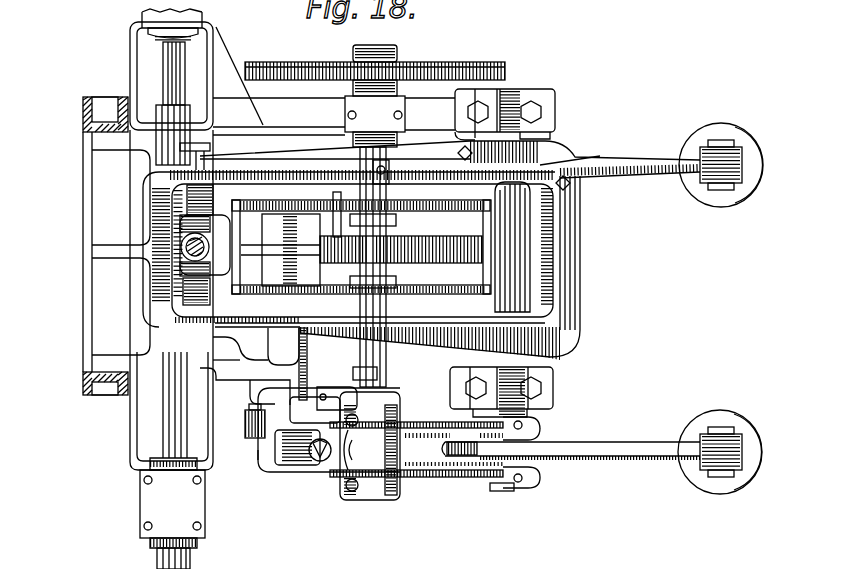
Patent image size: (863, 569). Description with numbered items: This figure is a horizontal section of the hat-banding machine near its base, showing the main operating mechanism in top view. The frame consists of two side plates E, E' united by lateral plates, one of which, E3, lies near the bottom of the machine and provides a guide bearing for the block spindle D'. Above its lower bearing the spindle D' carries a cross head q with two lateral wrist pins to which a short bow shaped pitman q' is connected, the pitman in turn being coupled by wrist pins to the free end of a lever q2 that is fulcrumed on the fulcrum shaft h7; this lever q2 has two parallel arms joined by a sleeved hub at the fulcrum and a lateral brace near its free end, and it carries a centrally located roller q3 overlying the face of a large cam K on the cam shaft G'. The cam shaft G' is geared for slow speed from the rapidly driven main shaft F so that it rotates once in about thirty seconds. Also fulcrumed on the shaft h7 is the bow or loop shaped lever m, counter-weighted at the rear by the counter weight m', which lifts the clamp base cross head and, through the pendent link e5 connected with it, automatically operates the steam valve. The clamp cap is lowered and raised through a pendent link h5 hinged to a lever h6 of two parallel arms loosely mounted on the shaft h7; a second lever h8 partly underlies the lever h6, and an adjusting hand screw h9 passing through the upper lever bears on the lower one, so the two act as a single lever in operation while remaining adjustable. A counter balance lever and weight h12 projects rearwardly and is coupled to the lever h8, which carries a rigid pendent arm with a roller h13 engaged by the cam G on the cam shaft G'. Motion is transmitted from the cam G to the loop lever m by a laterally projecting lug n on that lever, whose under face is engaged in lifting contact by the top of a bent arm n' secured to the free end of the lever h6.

The side plate E' is at (78, 106).
The side plate E is at (79, 400).
The lateral plate E3 is at (100, 220).
The block spindle D' is at (121, 259).
The main shaft F is at (167, 362).
The cross head q is at (346, 264).
The bow shaped pitman q' is at (221, 242).
The lever q2 is at (361, 238).
The roller q3 is at (368, 250).
The cam K is at (291, 250).
The bow or loop shaped lever m is at (450, 146).
The counter weight m' is at (721, 151).
The pendent link e5 is at (390, 162).
The lug n is at (283, 346).
The bent arm n' is at (317, 364).
The cam G is at (329, 455).
The cam shaft G' is at (370, 477).
The pendent link h5 is at (253, 440).
The lever h6 is at (268, 468).
The fulcrum shaft h7 is at (508, 490).
The lever h8 is at (457, 462).
The adjusting hand screw h9 is at (318, 462).
The counter balance lever and weight h12 is at (718, 414).
The roller h13 is at (392, 495).